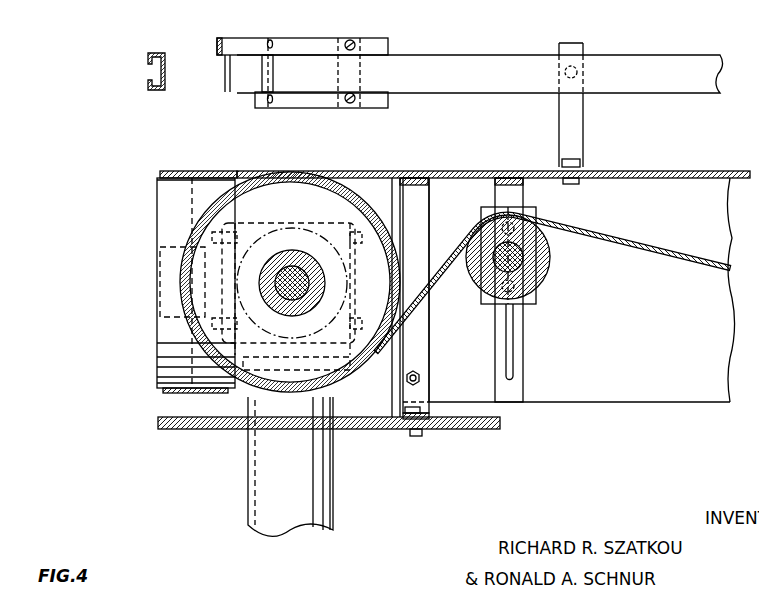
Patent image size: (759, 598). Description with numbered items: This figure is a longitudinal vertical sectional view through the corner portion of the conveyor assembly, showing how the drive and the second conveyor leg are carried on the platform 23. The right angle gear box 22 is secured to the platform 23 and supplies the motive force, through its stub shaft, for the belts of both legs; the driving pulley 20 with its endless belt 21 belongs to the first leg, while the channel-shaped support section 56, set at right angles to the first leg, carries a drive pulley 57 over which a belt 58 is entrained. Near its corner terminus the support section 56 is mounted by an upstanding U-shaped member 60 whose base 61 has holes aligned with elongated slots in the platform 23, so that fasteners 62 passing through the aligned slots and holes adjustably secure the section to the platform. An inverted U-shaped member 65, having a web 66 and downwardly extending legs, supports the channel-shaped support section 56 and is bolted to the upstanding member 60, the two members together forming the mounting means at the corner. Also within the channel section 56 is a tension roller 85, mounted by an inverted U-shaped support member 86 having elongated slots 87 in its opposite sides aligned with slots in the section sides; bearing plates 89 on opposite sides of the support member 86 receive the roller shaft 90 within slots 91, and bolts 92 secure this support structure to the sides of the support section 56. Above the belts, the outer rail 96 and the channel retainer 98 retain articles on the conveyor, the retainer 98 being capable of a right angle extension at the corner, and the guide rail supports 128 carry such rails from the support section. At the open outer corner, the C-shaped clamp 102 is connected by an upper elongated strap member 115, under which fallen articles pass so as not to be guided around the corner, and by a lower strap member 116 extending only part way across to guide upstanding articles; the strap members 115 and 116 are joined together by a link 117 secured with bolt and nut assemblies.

The driving pulley 20 is at (172, 183).
The belt 21 is at (182, 171).
The right angle gear box 22 is at (333, 528).
The platform 23 is at (500, 424).
The support section 56 is at (610, 390).
The drive pulley 57 is at (388, 182).
The belt 58 is at (394, 172).
The upstanding U-shaped member 60 is at (415, 362).
The base 61 is at (406, 409).
The fasteners 62 is at (416, 437).
The inverted U-shaped member 65 is at (438, 221).
The web 66 is at (430, 184).
The tension roller 85 is at (548, 262).
The inverted U-shaped support member 86 is at (522, 335).
The elongated slots 87 is at (505, 342).
The bearing plates 89 is at (533, 208).
The shaft 90 is at (535, 240).
The slots 91 is at (489, 273).
The bolts 92 is at (522, 292).
The outer rail 96 is at (160, 53).
The channel retainer 98 is at (632, 70).
The C-shaped clamp 102 is at (355, 40).
The upper elongated strap member 115 is at (288, 48).
The lower strap member 116 is at (300, 105).
The link 117 is at (262, 75).
The guide rail supports 128 is at (582, 122).